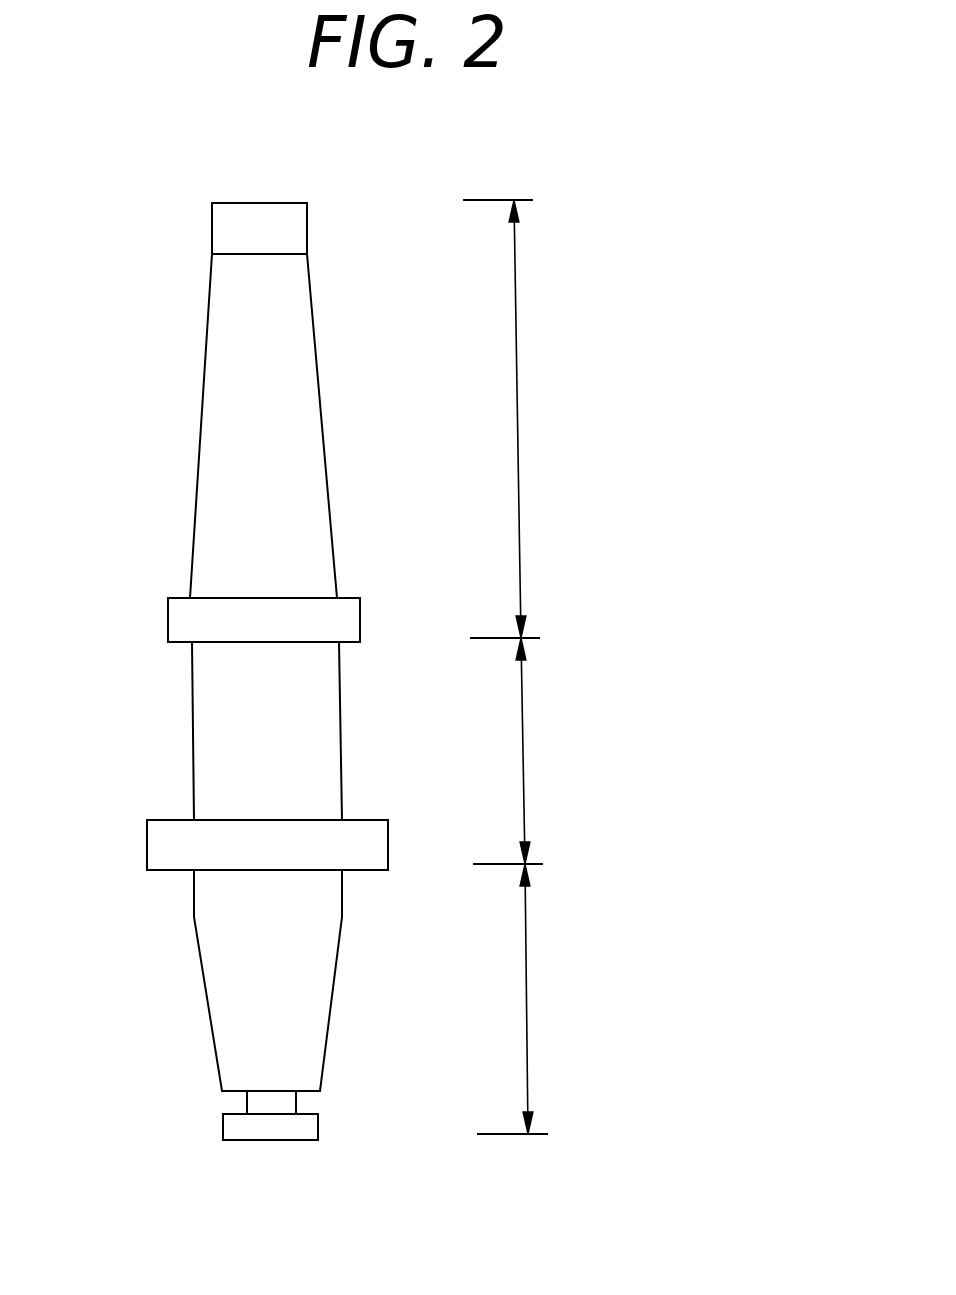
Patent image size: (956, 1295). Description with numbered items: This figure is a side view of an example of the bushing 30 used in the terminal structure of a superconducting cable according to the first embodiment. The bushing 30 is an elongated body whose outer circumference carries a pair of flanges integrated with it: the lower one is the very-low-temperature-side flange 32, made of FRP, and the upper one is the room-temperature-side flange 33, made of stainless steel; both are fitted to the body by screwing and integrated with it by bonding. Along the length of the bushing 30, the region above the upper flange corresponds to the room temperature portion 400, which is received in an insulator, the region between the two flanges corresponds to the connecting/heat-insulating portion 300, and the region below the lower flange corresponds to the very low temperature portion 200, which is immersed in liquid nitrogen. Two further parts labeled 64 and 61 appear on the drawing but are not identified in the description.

The bushing 30 is at (128, 348).
The terminal 64 is at (287, 220).
The conductor 61 is at (308, 427).
The room-temperature-side flange 33 is at (185, 620).
The very-low-temperature-side flange 32 is at (165, 848).
The room temperature portion 400 is at (521, 427).
The connecting/heat-insulating portion 300 is at (522, 722).
The very low temperature portion 200 is at (527, 970).